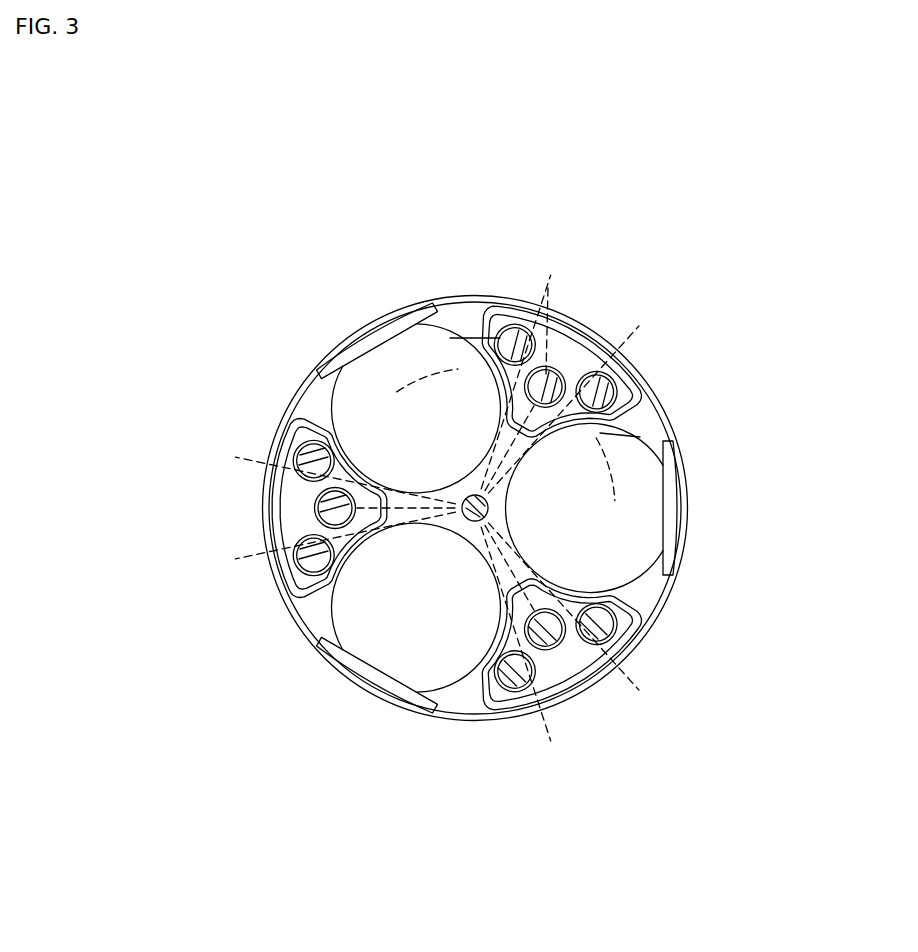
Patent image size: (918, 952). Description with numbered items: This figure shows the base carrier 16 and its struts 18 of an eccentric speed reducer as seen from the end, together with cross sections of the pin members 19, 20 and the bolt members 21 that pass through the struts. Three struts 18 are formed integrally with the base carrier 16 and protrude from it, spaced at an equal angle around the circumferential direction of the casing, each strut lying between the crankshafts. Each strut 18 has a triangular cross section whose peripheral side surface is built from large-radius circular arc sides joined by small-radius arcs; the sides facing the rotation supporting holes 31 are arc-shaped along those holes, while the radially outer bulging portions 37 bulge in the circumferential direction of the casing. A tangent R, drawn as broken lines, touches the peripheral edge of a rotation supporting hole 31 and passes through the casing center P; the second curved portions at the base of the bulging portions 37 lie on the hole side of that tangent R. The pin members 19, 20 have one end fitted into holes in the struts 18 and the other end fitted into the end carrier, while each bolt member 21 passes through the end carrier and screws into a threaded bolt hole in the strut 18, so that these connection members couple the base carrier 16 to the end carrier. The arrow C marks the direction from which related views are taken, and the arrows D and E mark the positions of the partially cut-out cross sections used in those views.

The base carrier 16 is at (648, 580).
The strut 18 is at (596, 392).
The pin member 19 is at (310, 460).
The pin member 20 is at (514, 340).
The bolt member 21 is at (571, 342).
The rotation supporting hole 31 is at (333, 400).
The bulging portion 37 is at (305, 460).
The casing center P is at (506, 430).
The tangent R is at (551, 277).
The arrows D- D is at (422, 382).
The arrows E- E is at (470, 335).
The arrow C is at (623, 252).